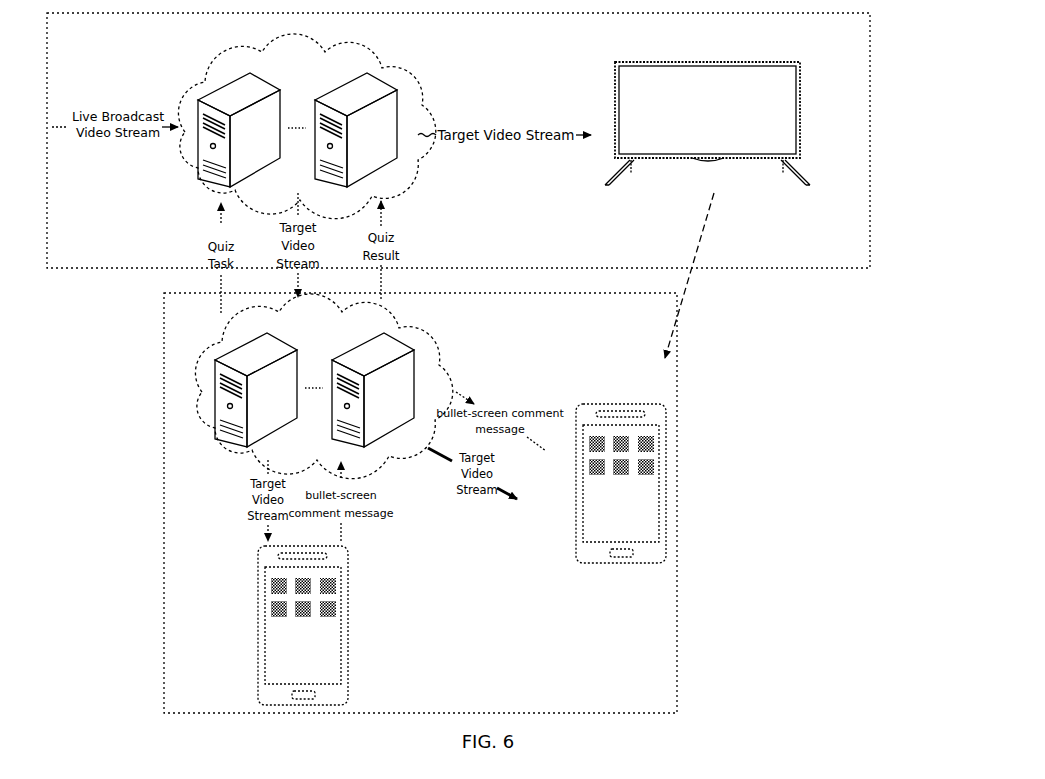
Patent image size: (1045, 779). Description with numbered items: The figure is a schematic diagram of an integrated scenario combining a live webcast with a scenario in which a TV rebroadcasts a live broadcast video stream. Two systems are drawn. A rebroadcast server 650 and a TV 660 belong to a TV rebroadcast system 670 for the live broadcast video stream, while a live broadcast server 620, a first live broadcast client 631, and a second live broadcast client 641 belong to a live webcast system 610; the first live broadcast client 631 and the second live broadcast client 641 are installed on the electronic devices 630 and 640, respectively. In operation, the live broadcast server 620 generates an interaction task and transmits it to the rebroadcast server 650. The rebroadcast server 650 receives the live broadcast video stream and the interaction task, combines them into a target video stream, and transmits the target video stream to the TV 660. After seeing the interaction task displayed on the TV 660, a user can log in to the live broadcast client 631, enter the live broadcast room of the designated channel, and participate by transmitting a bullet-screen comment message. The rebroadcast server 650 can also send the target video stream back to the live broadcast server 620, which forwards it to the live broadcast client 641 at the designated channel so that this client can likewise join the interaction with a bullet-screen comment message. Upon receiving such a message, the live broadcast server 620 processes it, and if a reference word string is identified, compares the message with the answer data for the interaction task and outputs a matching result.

The TV rebroadcast system 670 is at (858, 25).
The rebroadcast server 650 is at (405, 105).
The TV 660 is at (800, 86).
The live webcast system 610 is at (668, 583).
The live broadcast server 620 is at (440, 368).
The electronic device 630 is at (668, 495).
The first live broadcast client 631 is at (584, 470).
The electronic device 640 is at (350, 650).
The second live broadcast client 641 is at (266, 616).